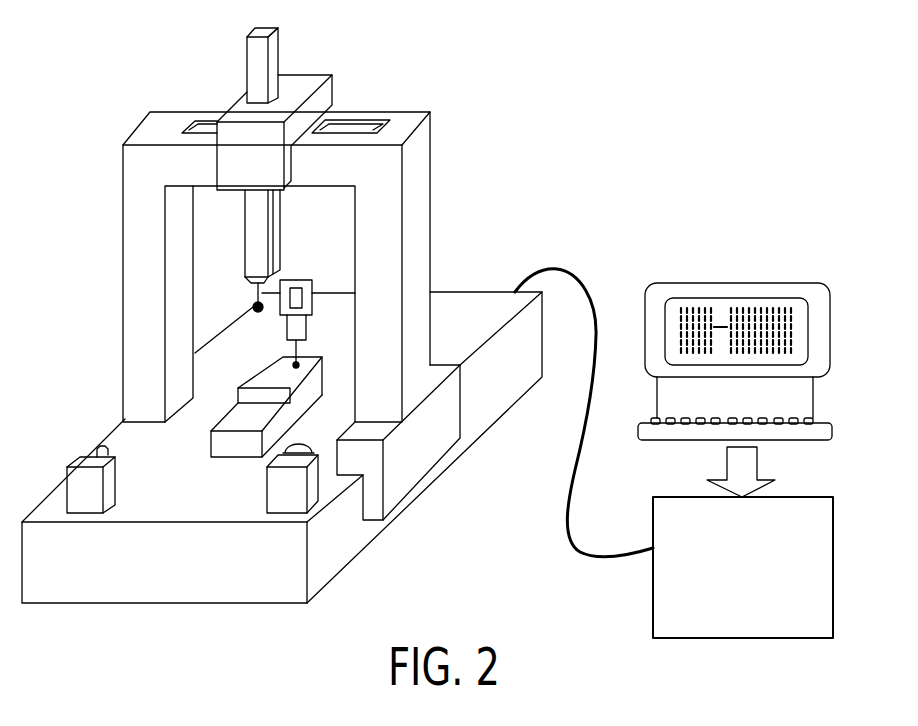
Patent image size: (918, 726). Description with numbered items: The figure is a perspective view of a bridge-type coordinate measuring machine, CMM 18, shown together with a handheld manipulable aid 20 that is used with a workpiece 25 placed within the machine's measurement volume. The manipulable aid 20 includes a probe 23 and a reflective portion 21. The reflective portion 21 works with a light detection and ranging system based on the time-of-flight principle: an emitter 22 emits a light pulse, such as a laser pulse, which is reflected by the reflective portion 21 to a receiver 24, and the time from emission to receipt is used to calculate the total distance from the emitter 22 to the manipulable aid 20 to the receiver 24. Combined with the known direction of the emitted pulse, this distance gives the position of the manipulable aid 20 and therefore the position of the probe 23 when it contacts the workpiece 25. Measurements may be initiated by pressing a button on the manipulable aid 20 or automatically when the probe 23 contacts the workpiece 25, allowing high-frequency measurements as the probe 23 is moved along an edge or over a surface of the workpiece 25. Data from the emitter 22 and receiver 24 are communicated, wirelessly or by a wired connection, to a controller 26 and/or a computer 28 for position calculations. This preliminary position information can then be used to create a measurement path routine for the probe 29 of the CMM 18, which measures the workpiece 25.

The coordinate measuring machine 18 is at (82, 205).
The probe 29 is at (252, 308).
The reflective portion 21 is at (296, 292).
The manipulable aid 20 is at (307, 328).
The probe 23 is at (292, 363).
The workpiece 25 is at (233, 448).
The emitter 22 is at (80, 484).
The receiver 24 is at (283, 506).
The computer 28 is at (822, 364).
The controller 26 is at (754, 581).